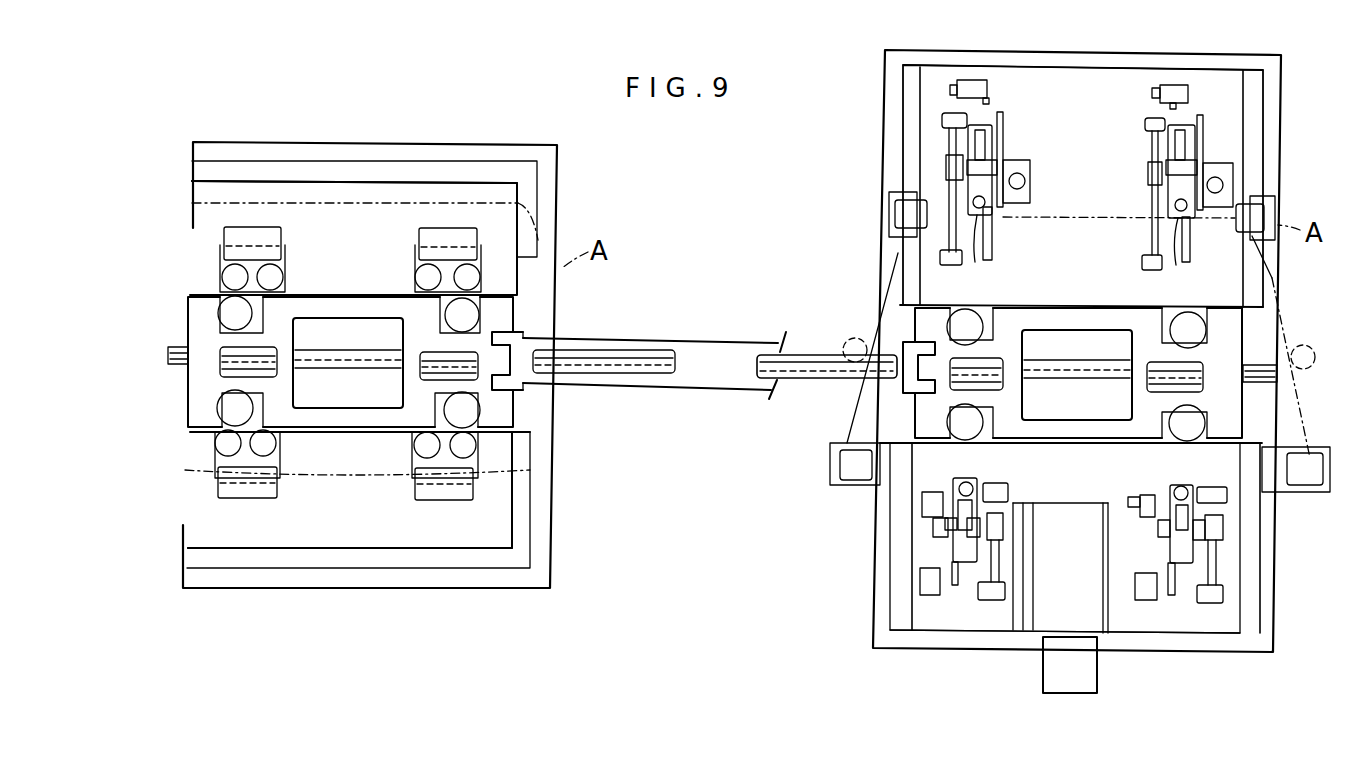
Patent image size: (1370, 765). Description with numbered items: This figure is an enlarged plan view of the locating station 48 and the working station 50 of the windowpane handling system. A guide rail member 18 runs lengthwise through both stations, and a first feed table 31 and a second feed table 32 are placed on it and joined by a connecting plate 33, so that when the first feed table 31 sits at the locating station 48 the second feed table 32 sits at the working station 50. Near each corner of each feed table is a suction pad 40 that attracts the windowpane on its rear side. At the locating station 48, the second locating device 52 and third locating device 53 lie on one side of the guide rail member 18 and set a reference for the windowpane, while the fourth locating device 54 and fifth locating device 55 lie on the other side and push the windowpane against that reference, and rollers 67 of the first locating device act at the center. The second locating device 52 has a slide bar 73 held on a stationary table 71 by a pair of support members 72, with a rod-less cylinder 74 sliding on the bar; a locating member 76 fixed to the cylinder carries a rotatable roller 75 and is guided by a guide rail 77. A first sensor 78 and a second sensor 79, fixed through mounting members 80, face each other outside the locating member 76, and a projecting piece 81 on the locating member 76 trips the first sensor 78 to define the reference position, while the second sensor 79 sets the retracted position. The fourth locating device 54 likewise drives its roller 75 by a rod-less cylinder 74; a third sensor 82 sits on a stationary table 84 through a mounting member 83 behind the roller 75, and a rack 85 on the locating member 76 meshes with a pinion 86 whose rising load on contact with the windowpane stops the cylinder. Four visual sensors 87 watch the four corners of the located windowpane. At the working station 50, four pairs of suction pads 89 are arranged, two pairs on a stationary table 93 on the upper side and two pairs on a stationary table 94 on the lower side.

The guide rail member 18 is at (799, 352).
The first feed table 31 is at (1230, 407).
The second feed table 32 is at (200, 413).
The connecting plate 33 is at (703, 380).
The suction pad 40 is at (240, 313).
The locating station 48 is at (1027, 48).
The working station 50 is at (307, 135).
The second locating device 52 is at (936, 556).
The third locating device 53 is at (1230, 580).
The fourth locating device 54 is at (928, 136).
The fifth locating device 55 is at (1262, 167).
The roller 67 is at (852, 340).
The stationary table 71 is at (962, 632).
The support member 72 is at (950, 112).
The slide bar 73 is at (948, 195).
The rod-less cylinder 74 is at (945, 166).
The roller 75 is at (978, 260).
The locating member 76 is at (995, 175).
The guide rail 77 is at (993, 240).
The first sensor 78 is at (922, 505).
The second sensor 79 is at (920, 590).
The mounting member 80 is at (840, 480).
The projecting piece 81 is at (940, 545).
The third sensor 82 is at (990, 100).
The mounting member 83 is at (972, 78).
The stationary table 84 is at (1118, 75).
The rack 85 is at (1004, 130).
The pinion 86 is at (1031, 182).
The visual sensor 87 is at (893, 215).
The suction pad 89 is at (222, 277).
The stationary table 93 is at (380, 192).
The stationary table 94 is at (322, 540).